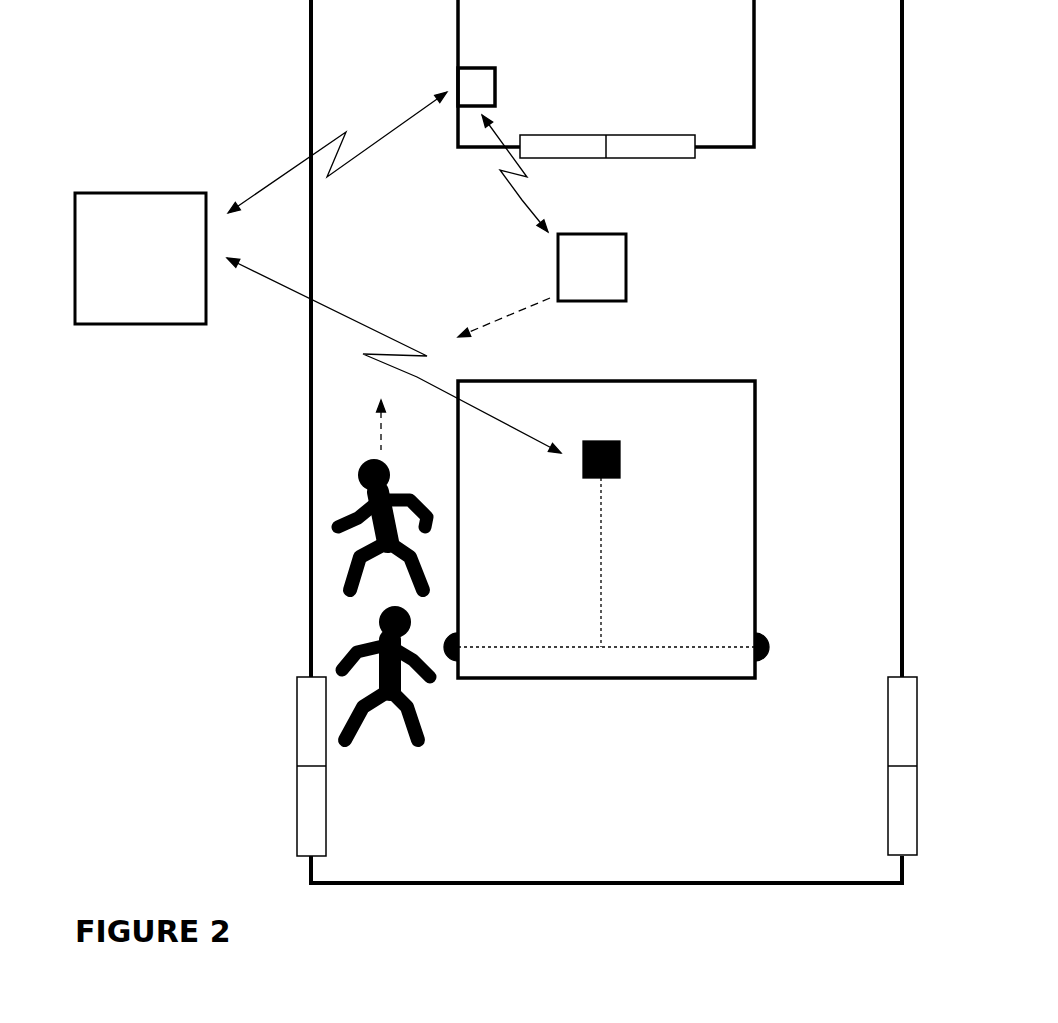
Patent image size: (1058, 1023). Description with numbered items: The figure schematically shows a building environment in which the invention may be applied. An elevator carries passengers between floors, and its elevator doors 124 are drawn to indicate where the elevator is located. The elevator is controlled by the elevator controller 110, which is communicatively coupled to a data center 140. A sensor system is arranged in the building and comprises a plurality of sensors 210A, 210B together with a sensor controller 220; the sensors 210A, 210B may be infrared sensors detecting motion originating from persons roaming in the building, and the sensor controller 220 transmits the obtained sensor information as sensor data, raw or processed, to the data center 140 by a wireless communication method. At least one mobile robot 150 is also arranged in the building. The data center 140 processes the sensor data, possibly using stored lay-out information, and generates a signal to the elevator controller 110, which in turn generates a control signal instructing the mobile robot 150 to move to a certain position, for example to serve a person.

The elevator controller 110 is at (492, 70).
The elevator doors 124 is at (643, 135).
The data center 140 is at (95, 193).
The mobile robot 150 is at (626, 262).
The sensor controller 220 is at (620, 458).
The sensor 210A is at (460, 647).
The sensor 210B is at (755, 641).